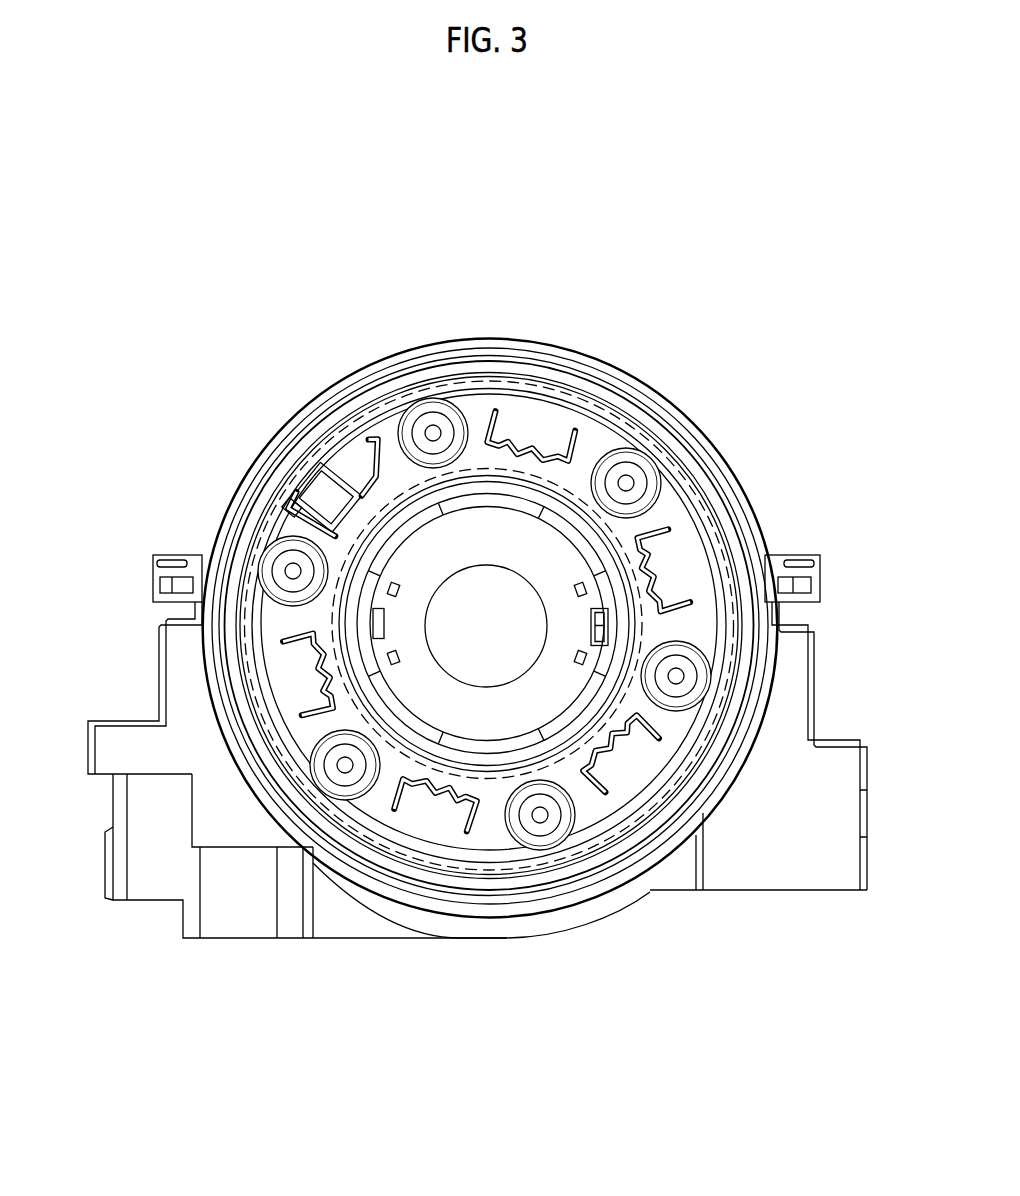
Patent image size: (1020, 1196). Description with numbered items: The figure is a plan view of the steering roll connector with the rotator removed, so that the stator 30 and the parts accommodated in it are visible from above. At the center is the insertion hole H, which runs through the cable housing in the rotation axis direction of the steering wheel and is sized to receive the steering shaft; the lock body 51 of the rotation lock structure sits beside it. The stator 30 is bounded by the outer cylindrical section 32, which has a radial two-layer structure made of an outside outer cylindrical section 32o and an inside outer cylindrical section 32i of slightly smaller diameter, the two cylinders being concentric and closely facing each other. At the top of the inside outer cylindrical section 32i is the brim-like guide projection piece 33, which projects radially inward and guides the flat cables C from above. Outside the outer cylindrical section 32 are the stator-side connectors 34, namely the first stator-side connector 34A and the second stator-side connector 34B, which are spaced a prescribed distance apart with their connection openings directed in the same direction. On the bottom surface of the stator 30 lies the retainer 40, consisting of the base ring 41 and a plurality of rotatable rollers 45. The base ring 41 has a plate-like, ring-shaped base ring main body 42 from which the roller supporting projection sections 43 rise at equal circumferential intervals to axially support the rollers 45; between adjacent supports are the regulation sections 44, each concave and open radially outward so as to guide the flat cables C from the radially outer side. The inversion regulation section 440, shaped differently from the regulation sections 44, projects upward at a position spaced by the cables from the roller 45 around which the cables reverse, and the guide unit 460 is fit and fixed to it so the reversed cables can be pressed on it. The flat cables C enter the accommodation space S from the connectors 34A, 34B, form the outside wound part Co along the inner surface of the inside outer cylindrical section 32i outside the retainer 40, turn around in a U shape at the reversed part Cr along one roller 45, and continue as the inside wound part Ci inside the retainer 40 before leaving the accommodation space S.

The stator 30 is at (452, 626).
The outer cylindrical section 32 is at (424, 628).
The outside outer cylindrical section 32o is at (203, 645).
The inside outer cylindrical section 32i is at (217, 698).
The guide projection piece 33 is at (681, 476).
The stator-side connectors 34 is at (477, 816).
The first stator-side connector 34A is at (238, 942).
The second stator-side connector 34B is at (757, 893).
The retainer 40 is at (430, 506).
The base ring 41 is at (430, 531).
The base ring main body 42 is at (385, 417).
The roller supporting projection sections 43 is at (443, 425).
The regulation sections 44 is at (513, 447).
The rotatable rollers 45 is at (600, 448).
The inversion regulation section 440 is at (378, 472).
The guide unit 460 is at (297, 500).
The lock body 51 is at (562, 598).
The flat cables C is at (421, 626).
The reversed part Cr is at (237, 520).
The outside wound part Co is at (243, 540).
The inside wound part Ci is at (293, 623).
The insertion hole H is at (477, 636).
The accommodation space S is at (675, 593).